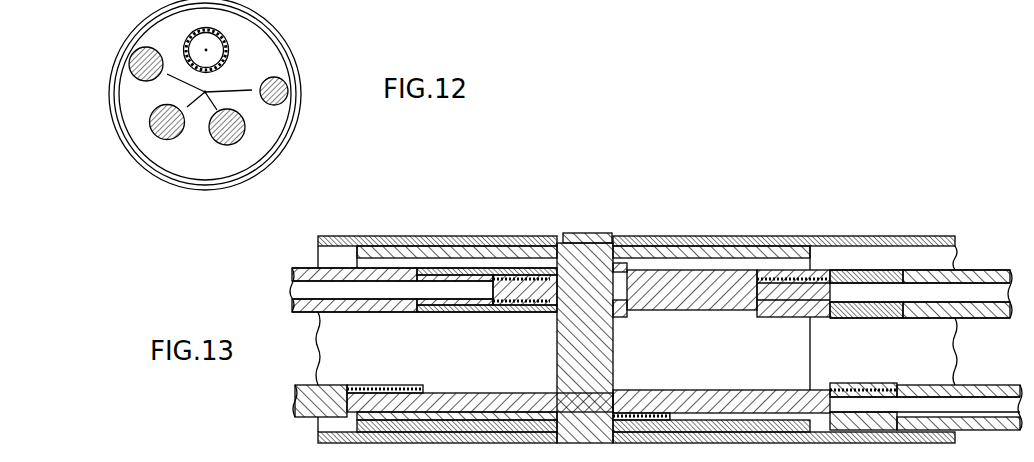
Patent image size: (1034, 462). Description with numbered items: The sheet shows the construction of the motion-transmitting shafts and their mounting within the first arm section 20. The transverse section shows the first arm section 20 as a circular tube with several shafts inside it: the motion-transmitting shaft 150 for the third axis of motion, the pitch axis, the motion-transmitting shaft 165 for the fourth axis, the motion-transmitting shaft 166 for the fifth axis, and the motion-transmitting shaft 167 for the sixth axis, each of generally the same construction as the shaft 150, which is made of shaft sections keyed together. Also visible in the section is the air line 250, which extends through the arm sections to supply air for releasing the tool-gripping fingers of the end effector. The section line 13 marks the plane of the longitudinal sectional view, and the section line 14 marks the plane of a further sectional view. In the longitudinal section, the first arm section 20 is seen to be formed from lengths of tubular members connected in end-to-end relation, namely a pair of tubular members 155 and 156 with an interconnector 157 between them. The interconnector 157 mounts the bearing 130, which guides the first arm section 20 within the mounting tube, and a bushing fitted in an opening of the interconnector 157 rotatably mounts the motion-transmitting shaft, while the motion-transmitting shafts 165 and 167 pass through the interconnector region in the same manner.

In FIG. 12, the section line 13— 13 is at (337, 90).
In FIG. 12, the section line 14— 14 is at (122, 55).
In FIG. 12, the first arm section 20 is at (278, 155).
In FIG. 13, the first arm section 20 is at (715, 240).
In FIG. 13, the bearing 130 is at (592, 234).
In FIG. 12, the motion-transmitting shaft 150 is at (132, 77).
In FIG. 13, the tubular member 155 is at (463, 240).
In FIG. 13, the tubular member 156 is at (893, 237).
In FIG. 12, the interconnector 157 is at (288, 52).
In FIG. 13, the interconnector 157 is at (563, 236).
In FIG. 12, the motion-transmitting shaft 165 is at (165, 140).
In FIG. 13, the motion-transmitting shaft 165 is at (688, 312).
In FIG. 12, the motion-transmitting shaft 166 is at (225, 145).
In FIG. 12, the motion-transmitting shaft 167 is at (275, 102).
In FIG. 13, the motion-transmitting shaft 167 is at (757, 390).
In FIG. 12, the air line 250 is at (228, 45).